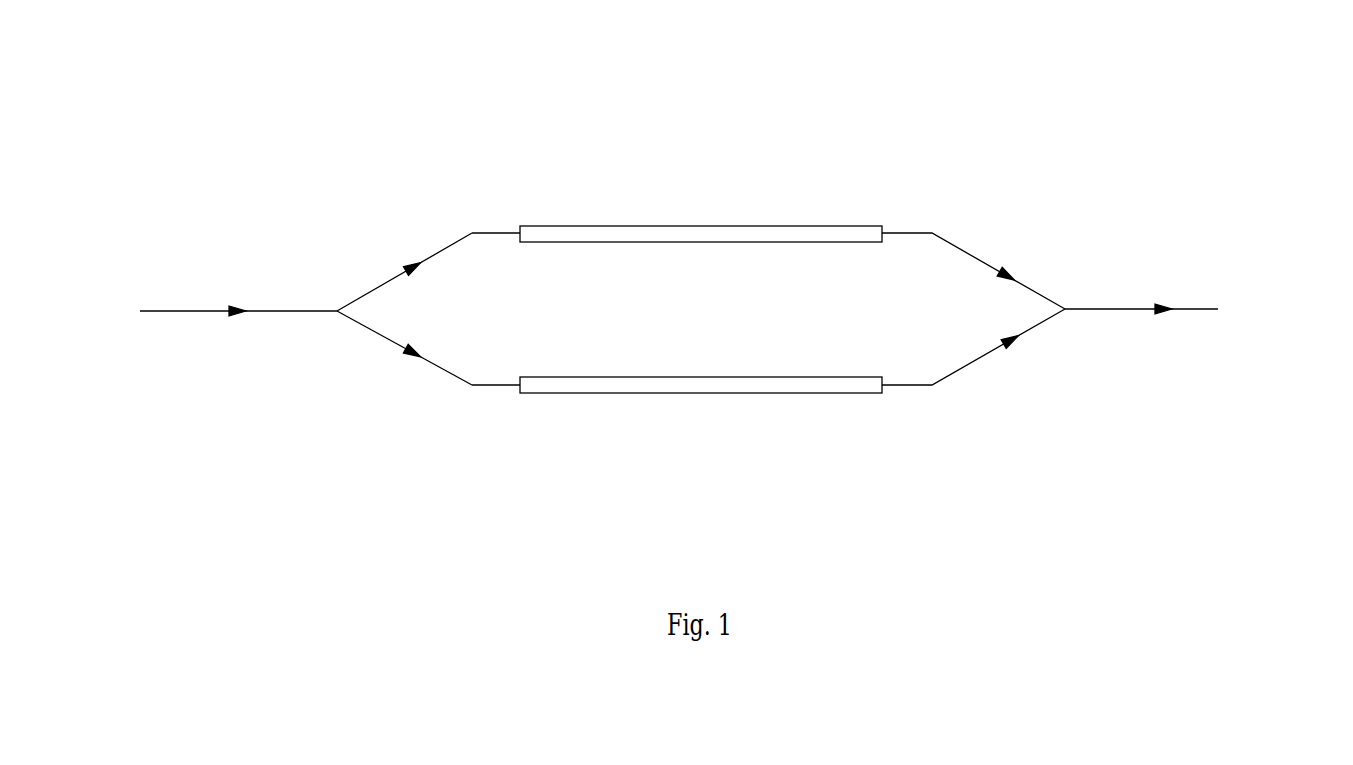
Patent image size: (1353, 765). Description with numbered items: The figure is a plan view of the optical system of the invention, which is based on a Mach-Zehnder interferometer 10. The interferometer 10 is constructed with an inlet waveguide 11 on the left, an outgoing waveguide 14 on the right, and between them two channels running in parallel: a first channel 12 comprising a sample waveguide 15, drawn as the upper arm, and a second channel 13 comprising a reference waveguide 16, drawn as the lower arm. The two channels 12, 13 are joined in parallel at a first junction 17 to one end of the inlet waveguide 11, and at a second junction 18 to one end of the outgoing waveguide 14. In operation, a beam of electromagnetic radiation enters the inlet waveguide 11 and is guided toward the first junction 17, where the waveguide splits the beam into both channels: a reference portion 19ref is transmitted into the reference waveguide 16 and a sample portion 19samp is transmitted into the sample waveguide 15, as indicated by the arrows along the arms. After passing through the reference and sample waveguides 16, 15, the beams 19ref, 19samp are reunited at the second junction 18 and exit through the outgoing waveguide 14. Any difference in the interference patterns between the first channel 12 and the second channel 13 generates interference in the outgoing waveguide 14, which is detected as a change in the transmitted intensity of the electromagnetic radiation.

The Mach-Zehnder interferometer 10 is at (324, 103).
The inlet waveguide 11 is at (290, 313).
The first channel 12 is at (442, 245).
The second channel 13 is at (447, 378).
The outgoing waveguide 14 is at (1119, 298).
The sample waveguide 15 is at (667, 225).
The reference waveguide 16 is at (682, 402).
The first junction 17 is at (335, 302).
The second junction 18 is at (1067, 317).
The sample portion of the beam 19samp is at (412, 258).
The reference portion of the beam 19ref is at (410, 360).